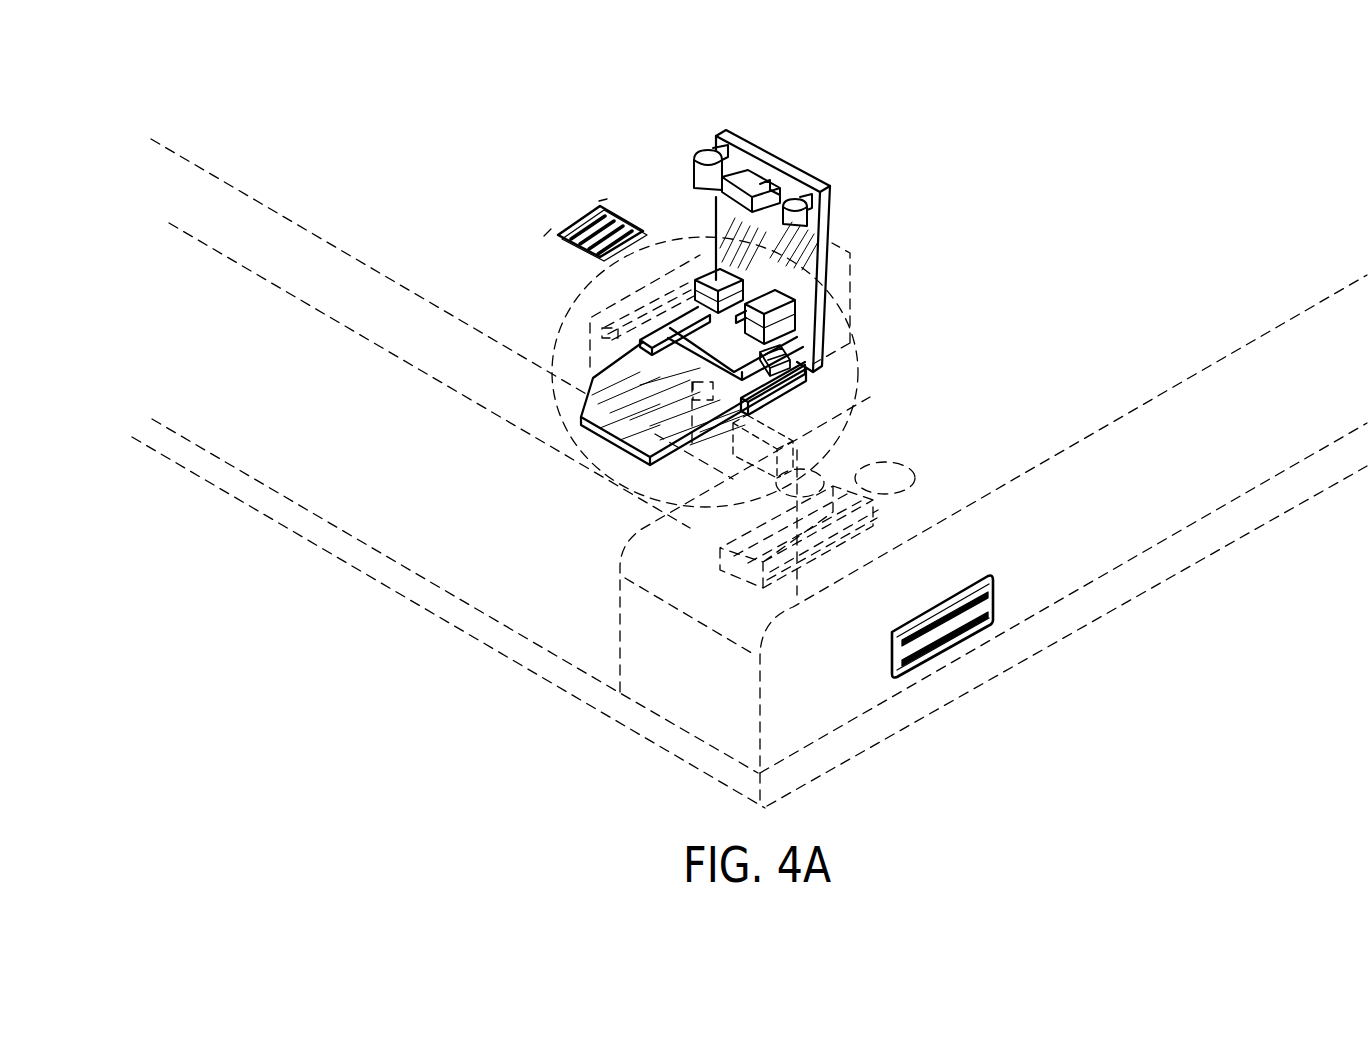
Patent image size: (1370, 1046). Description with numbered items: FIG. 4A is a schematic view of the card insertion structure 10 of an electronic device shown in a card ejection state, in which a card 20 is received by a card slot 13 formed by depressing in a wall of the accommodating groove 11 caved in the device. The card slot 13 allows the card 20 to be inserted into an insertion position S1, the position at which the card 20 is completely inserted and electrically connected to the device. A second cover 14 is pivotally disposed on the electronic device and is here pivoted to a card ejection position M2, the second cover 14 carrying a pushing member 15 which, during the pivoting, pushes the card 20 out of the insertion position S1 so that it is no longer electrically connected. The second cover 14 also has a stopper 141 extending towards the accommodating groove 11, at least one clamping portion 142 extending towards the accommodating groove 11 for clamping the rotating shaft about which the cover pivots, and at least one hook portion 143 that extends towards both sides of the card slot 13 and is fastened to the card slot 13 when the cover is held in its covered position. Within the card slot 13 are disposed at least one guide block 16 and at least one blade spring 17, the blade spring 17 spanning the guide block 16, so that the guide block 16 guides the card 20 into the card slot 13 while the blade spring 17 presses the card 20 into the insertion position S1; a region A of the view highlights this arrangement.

The card insertion structure 10 is at (492, 702).
The accommodating groove 11 is at (453, 580).
The card slot 13 is at (606, 354).
The second cover 14 is at (776, 166).
The pushing member 15 is at (693, 314).
The guide block 16 is at (797, 388).
The blade spring 17 is at (783, 420).
The card 20 is at (584, 433).
The stopper 141 is at (704, 184).
The clamping portion 142 is at (790, 302).
The hook portion 143 is at (829, 185).
The insertion position S1 is at (783, 354).
The region A is at (905, 387).
The card ejection position M2 is at (778, 219).